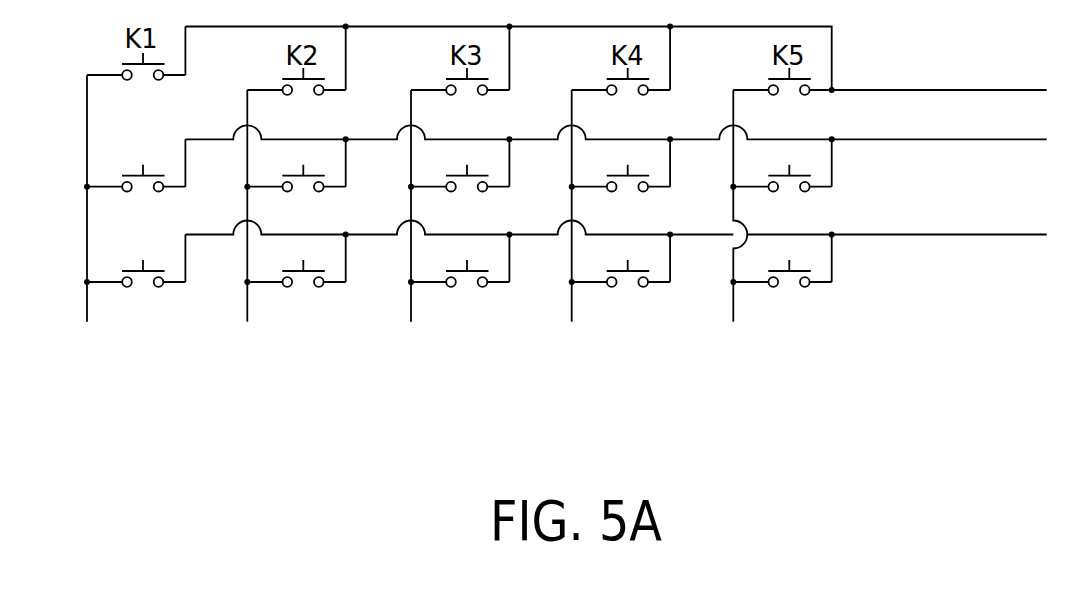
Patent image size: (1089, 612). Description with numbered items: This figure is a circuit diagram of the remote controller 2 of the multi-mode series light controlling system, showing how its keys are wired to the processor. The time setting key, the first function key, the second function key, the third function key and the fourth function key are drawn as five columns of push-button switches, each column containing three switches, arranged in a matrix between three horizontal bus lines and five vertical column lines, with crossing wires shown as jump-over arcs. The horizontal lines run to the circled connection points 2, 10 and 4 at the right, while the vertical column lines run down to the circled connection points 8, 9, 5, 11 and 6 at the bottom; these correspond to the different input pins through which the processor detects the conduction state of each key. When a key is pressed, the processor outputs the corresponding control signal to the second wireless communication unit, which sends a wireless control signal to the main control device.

The remote controller 2 is at (959, 91).
The terminal 4 is at (916, 235).
The terminal 5 is at (411, 322).
The terminal 6 is at (733, 322).
The terminal 8 is at (87, 322).
The terminal 9 is at (247, 322).
The terminal 10 is at (959, 140).
The terminal 11 is at (572, 322).